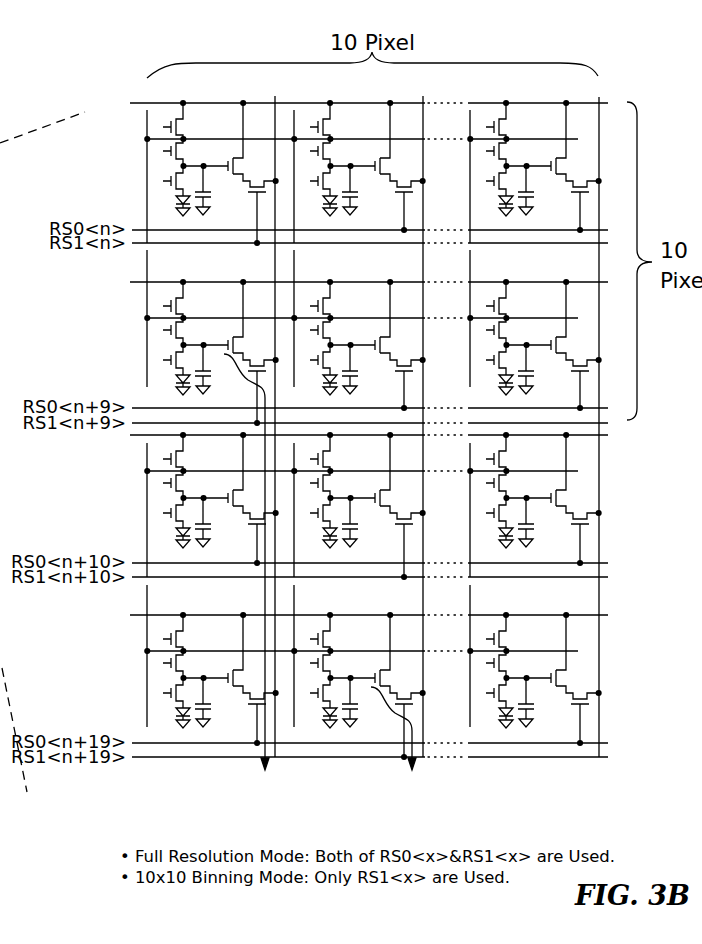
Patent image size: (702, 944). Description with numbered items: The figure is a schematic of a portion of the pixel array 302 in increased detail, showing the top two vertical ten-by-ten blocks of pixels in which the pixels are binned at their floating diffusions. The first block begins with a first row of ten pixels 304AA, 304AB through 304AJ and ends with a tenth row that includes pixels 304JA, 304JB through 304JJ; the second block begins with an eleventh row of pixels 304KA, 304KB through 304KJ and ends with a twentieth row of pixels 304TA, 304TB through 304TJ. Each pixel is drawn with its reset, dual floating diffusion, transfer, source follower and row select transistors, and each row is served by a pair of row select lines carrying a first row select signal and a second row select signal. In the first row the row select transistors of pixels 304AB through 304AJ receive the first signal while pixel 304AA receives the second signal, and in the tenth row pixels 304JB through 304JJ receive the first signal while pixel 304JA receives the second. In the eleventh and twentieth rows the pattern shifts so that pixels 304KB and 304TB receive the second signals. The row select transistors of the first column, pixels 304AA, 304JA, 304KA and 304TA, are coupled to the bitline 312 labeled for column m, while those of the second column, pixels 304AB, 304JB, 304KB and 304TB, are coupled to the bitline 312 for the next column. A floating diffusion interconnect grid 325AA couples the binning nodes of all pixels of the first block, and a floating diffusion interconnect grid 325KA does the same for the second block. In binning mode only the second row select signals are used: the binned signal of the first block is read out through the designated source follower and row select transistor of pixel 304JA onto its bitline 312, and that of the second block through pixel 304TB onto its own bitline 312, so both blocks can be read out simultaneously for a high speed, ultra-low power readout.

The pixel array 302 is at (622, 64).
The pixel 304AA is at (248, 96).
The pixel 304AB is at (395, 96).
The pixel 304AJ is at (572, 96).
The pixel 304JA is at (248, 278).
The pixel 304JB is at (395, 278).
The pixel 304JJ is at (572, 278).
The pixel 304KA is at (248, 610).
The pixel 304KB is at (395, 610).
The pixel 304KJ is at (572, 610).
The pixel 304TA is at (248, 796).
The pixel 304TB is at (395, 796).
The pixel 304TJ is at (572, 796).
The floating diffusion interconnect grid 325AA is at (147, 156).
The floating diffusion interconnect grid 325KA is at (147, 490).
The bitline 312 is at (258, 802).